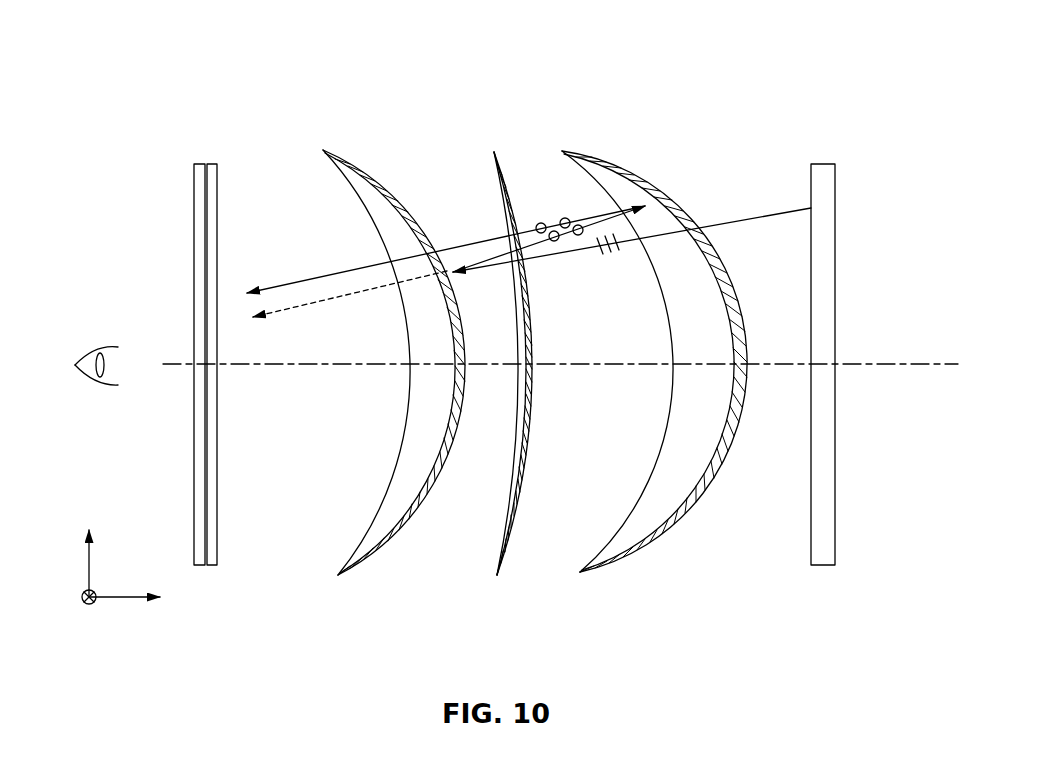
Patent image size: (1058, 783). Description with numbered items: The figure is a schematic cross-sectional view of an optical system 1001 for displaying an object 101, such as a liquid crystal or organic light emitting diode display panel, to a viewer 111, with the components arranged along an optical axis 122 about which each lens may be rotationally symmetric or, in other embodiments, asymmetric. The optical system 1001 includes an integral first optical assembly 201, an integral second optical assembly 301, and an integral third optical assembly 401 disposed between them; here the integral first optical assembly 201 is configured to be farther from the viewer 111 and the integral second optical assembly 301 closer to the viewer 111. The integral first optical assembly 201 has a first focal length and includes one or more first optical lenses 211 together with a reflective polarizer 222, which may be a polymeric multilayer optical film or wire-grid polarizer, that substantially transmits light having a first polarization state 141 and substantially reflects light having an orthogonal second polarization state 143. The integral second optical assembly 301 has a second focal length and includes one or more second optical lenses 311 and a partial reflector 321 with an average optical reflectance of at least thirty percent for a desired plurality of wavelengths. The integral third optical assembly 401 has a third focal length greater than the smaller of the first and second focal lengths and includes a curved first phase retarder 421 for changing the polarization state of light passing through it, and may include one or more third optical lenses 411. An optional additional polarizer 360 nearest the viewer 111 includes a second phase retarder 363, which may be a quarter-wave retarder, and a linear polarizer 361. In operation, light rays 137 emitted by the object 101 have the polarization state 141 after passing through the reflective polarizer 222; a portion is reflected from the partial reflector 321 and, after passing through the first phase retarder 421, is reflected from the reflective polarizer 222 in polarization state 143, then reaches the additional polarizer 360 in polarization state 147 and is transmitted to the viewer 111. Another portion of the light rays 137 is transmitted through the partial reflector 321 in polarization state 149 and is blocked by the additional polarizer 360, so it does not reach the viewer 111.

The optical system 1001 is at (141, 40).
The object 101 is at (828, 164).
The viewer 111 is at (108, 328).
The optical axis 122 is at (888, 363).
The light rays 137 is at (755, 217).
The polarization state 141 is at (601, 258).
The polarization state 143 is at (560, 219).
The polarization state 147 is at (322, 302).
The polarization state 149 is at (322, 320).
The integral first optical assembly 201 is at (622, 131).
The first optical lenses 211 is at (618, 547).
The reflective polarizer 222 is at (682, 517).
The integral second optical assembly 301 is at (288, 131).
The second optical lenses 311 is at (360, 546).
The partial reflector 321 is at (388, 548).
The additional polarizer 360 is at (193, 131).
The linear polarizer 361 is at (195, 487).
The second phase retarder 363 is at (215, 503).
The integral third optical assembly 401 is at (460, 131).
The third optical lenses 411 is at (511, 498).
The curved first phase retarder 421 is at (530, 458).